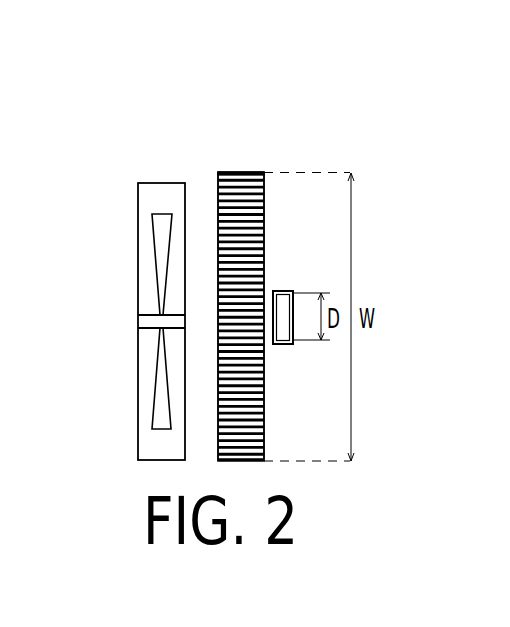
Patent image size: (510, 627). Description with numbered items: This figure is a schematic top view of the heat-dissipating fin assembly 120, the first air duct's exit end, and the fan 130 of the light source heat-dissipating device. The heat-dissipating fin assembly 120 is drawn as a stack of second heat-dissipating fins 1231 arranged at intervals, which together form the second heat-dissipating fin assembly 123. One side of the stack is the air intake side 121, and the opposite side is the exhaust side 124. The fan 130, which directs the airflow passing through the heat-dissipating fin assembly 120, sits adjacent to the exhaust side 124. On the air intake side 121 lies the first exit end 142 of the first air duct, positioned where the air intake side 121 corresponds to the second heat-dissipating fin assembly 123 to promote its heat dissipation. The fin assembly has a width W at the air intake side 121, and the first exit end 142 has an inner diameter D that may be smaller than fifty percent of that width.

The heat-dissipating fin assembly 120 is at (250, 110).
The air intake side 121 is at (264, 183).
The second heat-dissipating fin assembly 123 is at (230, 171).
The second heat-dissipating fins 1231 is at (253, 174).
The exhaust side 124 is at (218, 183).
The fan 130 is at (138, 225).
The first exit end 142 is at (278, 291).